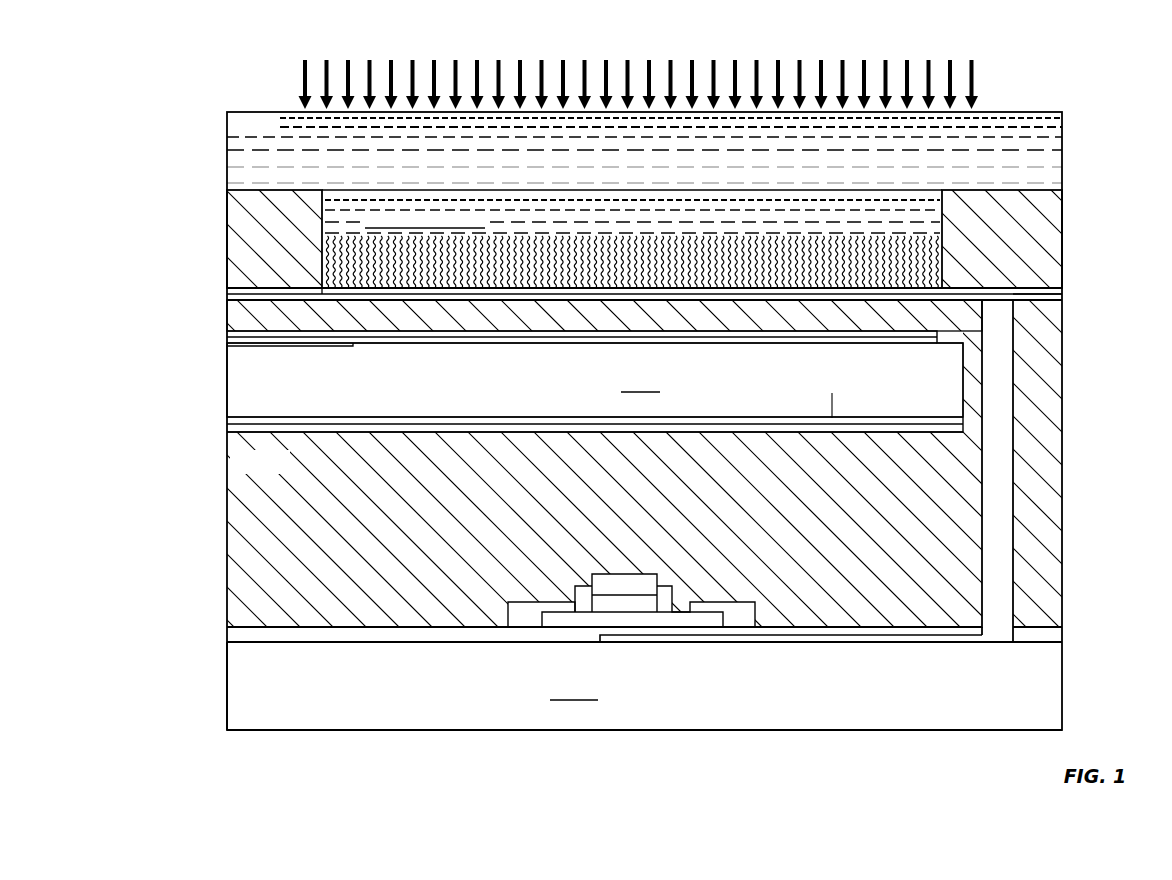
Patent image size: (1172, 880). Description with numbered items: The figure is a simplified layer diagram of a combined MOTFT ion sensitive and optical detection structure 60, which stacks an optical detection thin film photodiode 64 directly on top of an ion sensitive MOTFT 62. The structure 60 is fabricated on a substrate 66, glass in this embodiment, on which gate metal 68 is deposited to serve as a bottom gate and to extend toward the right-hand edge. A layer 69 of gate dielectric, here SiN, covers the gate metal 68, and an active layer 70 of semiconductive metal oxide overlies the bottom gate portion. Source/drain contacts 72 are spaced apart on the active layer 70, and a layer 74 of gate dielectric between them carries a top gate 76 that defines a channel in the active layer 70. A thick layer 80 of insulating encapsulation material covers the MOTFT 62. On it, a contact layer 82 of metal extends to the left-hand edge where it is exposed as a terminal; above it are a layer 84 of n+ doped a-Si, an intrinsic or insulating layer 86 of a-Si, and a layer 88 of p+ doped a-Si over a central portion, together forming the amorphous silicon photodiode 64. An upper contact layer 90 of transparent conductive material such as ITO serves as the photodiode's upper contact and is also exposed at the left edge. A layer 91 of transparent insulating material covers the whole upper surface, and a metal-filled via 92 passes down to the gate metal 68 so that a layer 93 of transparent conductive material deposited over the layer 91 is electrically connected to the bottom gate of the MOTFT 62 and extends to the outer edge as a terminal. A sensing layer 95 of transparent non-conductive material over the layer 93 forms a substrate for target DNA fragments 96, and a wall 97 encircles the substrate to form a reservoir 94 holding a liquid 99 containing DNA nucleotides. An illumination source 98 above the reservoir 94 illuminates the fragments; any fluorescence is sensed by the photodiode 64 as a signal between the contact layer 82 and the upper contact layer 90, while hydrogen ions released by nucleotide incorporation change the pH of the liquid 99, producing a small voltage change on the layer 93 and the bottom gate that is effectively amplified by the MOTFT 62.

The combined MOTFT ion sensitive and optical detection structure 60 is at (1147, 106).
The ion sensitive MOTFT 62 is at (783, 685).
The optical detection thin film photodiode 64 is at (1076, 320).
The substrate 66 is at (1050, 688).
The gate metal 68 is at (975, 637).
The layer of gate dielectric 69 is at (233, 635).
The active layer 70 is at (550, 620).
The source/drain contacts 72 is at (515, 622).
The layer of gate dielectric 74 is at (608, 603).
The top gate 76 is at (648, 587).
The layer of insulating encapsulation material 80 is at (237, 580).
The contact layer 82 is at (230, 430).
The layer of n+ doped a-Si 84 is at (228, 418).
The intrinsic or insulating layer of a-Si 86 is at (272, 385).
The layer of p+ doped a-Si 88 is at (353, 344).
The upper contact layer 90 is at (229, 335).
The layer of transparent insulating material 91 is at (229, 309).
The via 92 is at (1002, 490).
The layer of transparent conductive material 93 is at (1058, 298).
The reservoir 94 is at (930, 203).
The sensing layer 95 is at (1060, 287).
The target DNA fragments 96 is at (355, 240).
The wall 97 is at (1053, 223).
The illumination source 98 is at (975, 84).
The liquid 99 is at (1053, 143).